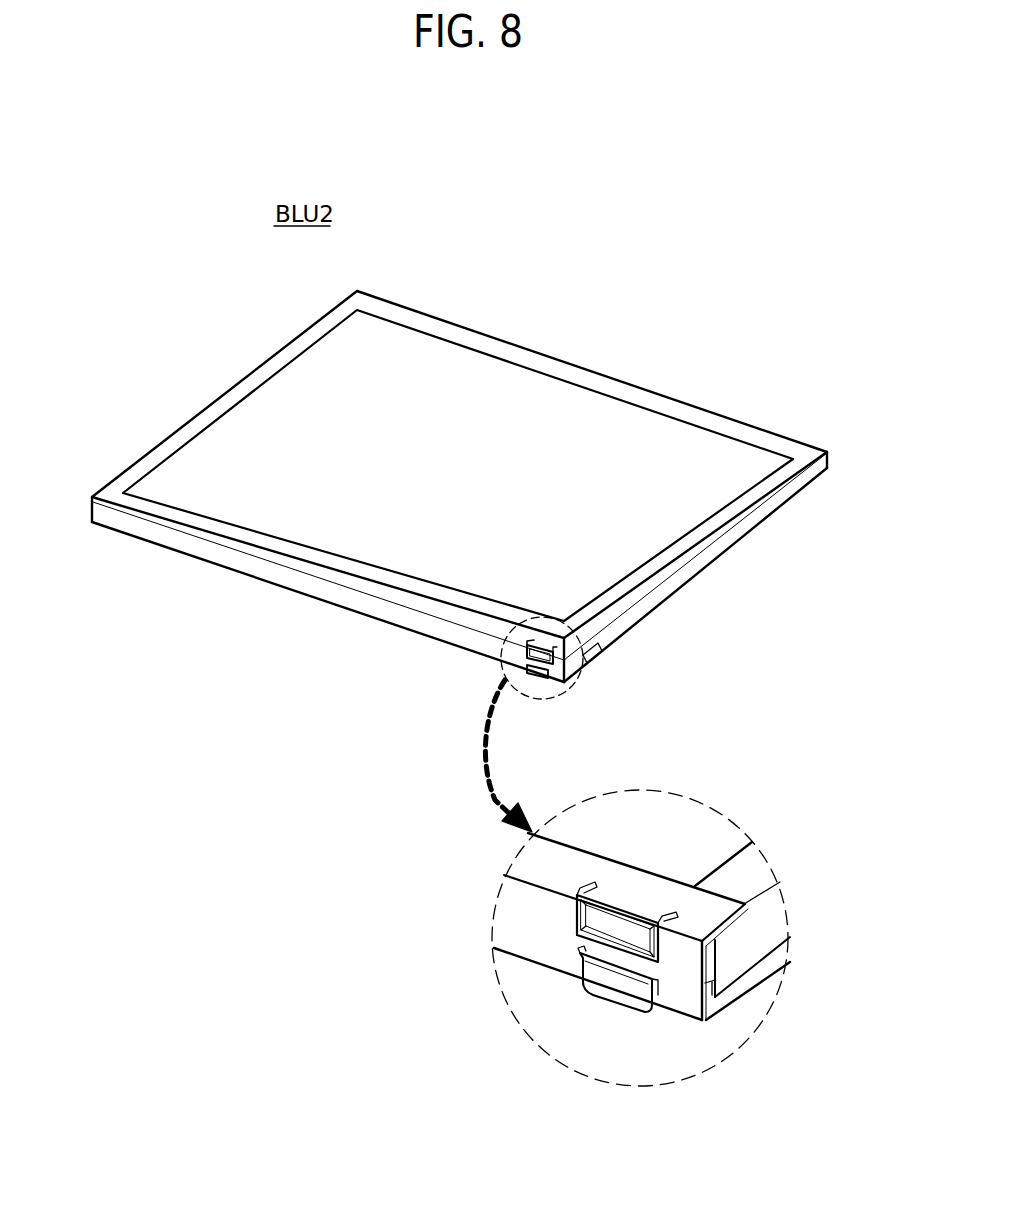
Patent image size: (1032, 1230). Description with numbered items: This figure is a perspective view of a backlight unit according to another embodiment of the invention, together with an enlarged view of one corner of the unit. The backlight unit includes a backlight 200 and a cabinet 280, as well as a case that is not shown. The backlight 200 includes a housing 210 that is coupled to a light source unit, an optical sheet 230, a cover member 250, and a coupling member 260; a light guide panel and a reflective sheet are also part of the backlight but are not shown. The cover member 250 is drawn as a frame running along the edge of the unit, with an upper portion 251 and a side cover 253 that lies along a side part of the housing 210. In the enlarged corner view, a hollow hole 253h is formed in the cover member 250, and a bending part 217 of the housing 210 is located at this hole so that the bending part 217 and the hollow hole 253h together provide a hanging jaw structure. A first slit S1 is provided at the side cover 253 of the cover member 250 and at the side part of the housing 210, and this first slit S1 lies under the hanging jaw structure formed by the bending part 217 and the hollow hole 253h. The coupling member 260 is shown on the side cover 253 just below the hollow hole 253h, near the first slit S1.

The backlight 200 is at (459, 497).
The housing 210 is at (597, 653).
The optical sheet 230 is at (680, 513).
The cabinet 280 is at (668, 568).
The cover member 250 is at (422, 761).
The upper frame portion 251 is at (355, 580).
The side cover 253 is at (317, 655).
The hollow hole 253h is at (593, 887).
The coupling member 260 is at (603, 983).
The bending part 217 is at (643, 942).
The first slit S1 is at (580, 977).